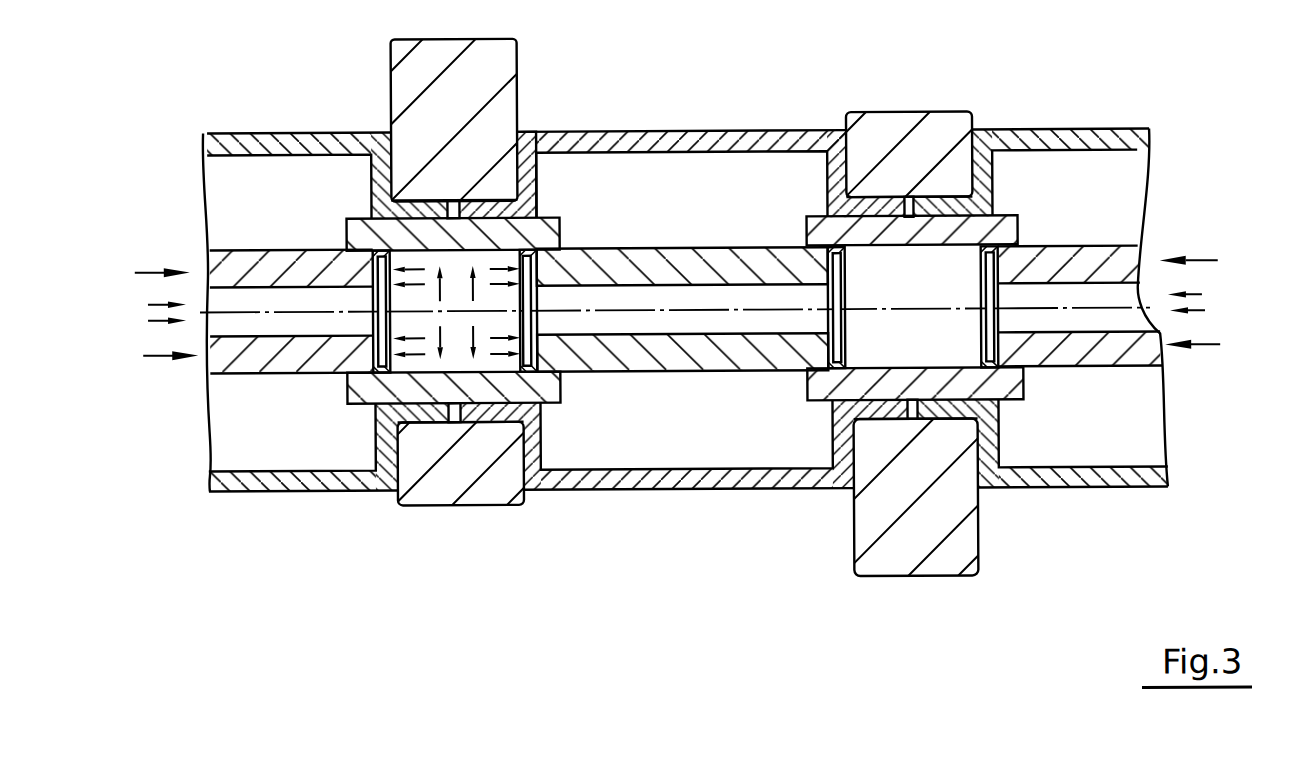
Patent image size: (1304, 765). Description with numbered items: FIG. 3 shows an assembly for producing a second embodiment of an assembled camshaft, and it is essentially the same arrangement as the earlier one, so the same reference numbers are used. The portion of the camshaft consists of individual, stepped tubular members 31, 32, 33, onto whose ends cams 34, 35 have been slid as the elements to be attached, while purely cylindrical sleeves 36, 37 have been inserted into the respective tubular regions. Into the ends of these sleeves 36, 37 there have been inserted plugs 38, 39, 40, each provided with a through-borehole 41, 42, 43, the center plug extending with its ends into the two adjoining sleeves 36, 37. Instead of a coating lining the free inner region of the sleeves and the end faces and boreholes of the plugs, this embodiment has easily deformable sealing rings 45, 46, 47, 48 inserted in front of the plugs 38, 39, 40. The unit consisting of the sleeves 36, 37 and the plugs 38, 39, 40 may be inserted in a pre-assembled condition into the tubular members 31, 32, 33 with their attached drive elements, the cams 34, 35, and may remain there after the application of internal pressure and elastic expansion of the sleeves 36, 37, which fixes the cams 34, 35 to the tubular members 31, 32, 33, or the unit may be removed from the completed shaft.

The tubular member 31 is at (288, 130).
The tubular member 32 is at (655, 143).
The tubular member 33 is at (1062, 143).
The cam 34 is at (424, 490).
The cam 35 is at (885, 558).
The cylindrical sleeve 36 is at (509, 403).
The cylindrical sleeve 37 is at (945, 385).
The plug 38 is at (292, 360).
The plug 39 is at (712, 352).
The plug 40 is at (1127, 353).
The through-borehole 41 is at (240, 322).
The through-borehole 42 is at (640, 318).
The through-borehole 43 is at (1068, 318).
The sealing ring 45 is at (378, 376).
The sealing ring 46 is at (540, 376).
The sealing ring 47 is at (833, 383).
The sealing ring 48 is at (1001, 380).